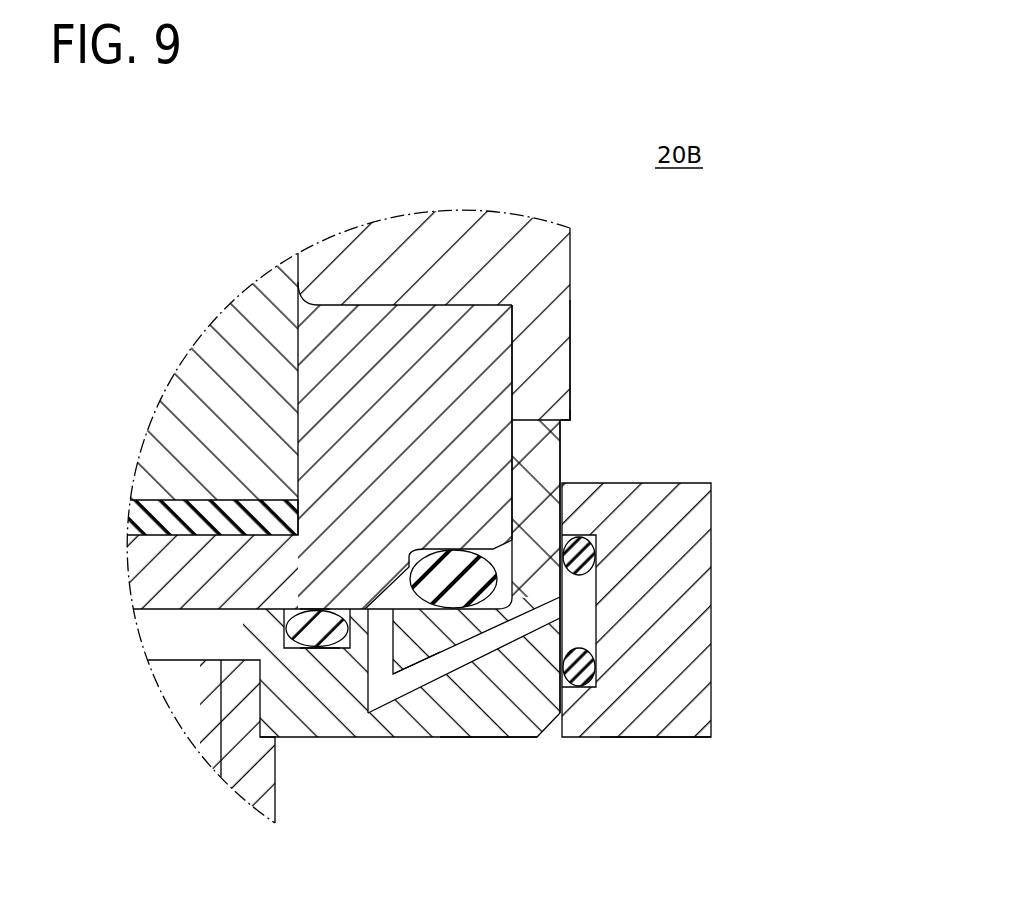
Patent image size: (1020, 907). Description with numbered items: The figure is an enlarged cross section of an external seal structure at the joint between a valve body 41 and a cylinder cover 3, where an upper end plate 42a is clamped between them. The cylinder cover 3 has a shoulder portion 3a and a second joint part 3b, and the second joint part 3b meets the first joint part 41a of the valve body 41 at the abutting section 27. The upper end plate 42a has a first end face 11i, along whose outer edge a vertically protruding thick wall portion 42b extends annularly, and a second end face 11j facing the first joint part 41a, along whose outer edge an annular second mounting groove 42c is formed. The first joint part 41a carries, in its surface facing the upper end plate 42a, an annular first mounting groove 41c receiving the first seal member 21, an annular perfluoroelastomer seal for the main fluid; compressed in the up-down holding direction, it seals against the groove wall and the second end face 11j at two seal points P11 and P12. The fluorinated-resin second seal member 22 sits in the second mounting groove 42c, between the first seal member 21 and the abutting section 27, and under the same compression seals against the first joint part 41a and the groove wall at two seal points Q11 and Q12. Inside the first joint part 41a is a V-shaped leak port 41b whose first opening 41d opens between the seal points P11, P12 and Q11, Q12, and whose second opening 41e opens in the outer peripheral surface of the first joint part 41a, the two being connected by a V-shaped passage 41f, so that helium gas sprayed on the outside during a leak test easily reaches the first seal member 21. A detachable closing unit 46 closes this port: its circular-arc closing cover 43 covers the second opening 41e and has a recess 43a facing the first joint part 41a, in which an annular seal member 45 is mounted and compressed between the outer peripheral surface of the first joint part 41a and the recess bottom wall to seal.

The cylinder cover 3 is at (477, 354).
The shoulder portion 3a is at (383, 313).
The second joint part 3b is at (454, 550).
The first end face 11i is at (201, 533).
The second end face 11j is at (200, 598).
The first seal member 21 is at (222, 743).
The second seal member 22 is at (563, 421).
The abutting section 27 is at (570, 420).
The valve body 41 is at (524, 547).
The first joint part 41a is at (520, 737).
The leak port 41b is at (386, 710).
The first mounting groove 41c is at (350, 648).
The first opening 41d is at (380, 632).
The second opening 41e is at (552, 615).
The V-shaped passage 41f is at (413, 680).
The upper end plate 42a is at (290, 640).
The thick wall portion 42b is at (497, 333).
The second mounting groove 42c is at (560, 468).
The closing cover 43 is at (681, 662).
The recess 43a is at (578, 597).
The annular seal member 45 is at (578, 665).
The closing unit 46 is at (667, 745).
The seal point P11 is at (311, 650).
The seal point P12 is at (312, 607).
The seal point Q11 is at (465, 678).
The seal point Q12 is at (455, 550).